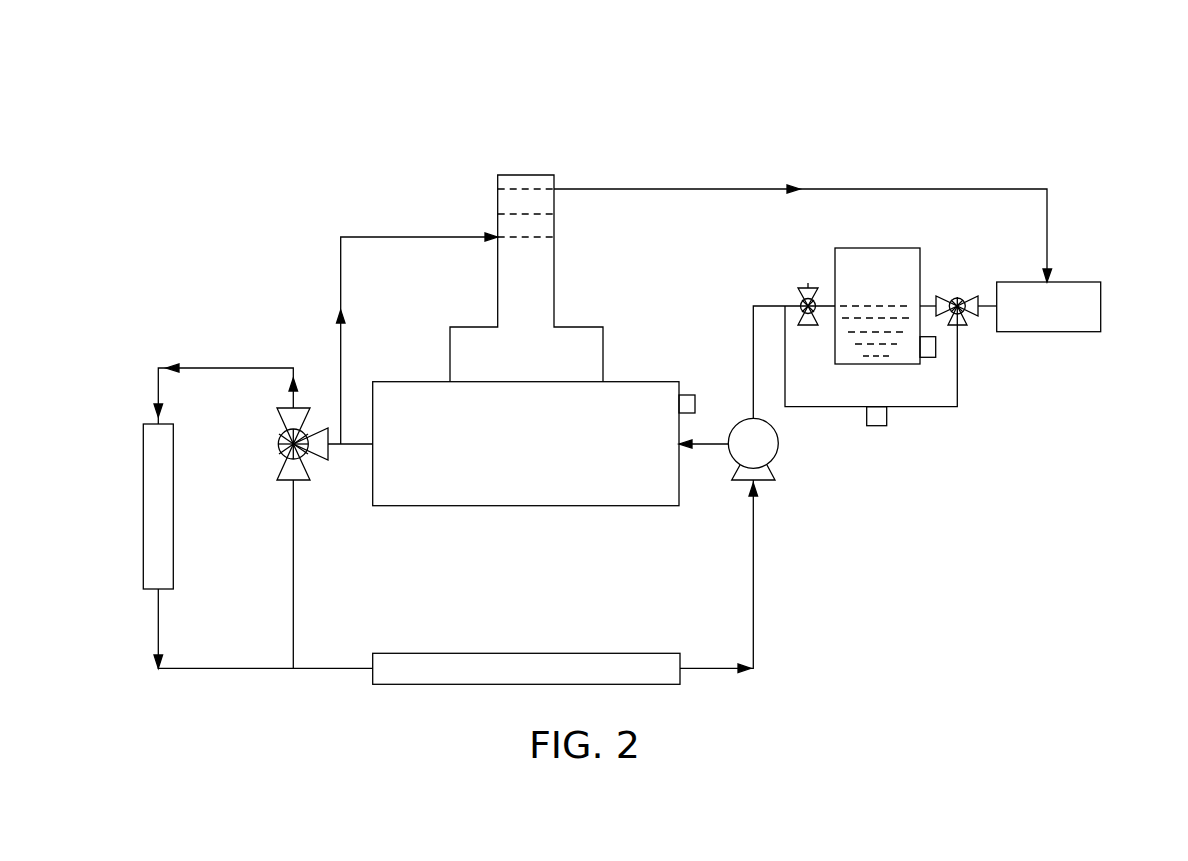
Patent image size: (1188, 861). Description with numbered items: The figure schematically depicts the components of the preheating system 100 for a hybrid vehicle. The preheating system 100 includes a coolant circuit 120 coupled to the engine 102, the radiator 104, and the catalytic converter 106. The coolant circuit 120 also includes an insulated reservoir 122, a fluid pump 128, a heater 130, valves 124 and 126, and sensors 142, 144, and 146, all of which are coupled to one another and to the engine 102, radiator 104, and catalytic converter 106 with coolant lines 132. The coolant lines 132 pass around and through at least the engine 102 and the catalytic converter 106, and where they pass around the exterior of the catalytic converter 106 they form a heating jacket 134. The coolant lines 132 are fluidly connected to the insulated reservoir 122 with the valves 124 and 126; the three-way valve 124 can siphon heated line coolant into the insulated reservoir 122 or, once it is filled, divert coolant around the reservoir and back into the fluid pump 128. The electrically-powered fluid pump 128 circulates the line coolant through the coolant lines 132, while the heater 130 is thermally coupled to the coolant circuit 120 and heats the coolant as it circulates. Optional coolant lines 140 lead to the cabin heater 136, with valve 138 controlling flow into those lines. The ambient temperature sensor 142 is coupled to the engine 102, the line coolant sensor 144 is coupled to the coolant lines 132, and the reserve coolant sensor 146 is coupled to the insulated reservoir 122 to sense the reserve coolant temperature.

The preheating system 100 is at (1014, 58).
The engine 102 is at (547, 459).
The radiator 104 is at (520, 653).
The catalytic converter 106 is at (532, 286).
The coolant circuit 120 is at (1135, 451).
The insulated reservoir 122 is at (872, 248).
The three-way valve 124 is at (957, 297).
The valve 126 is at (807, 283).
The fluid pump 128 is at (775, 457).
The heater 130 is at (1080, 332).
The coolant lines 132 is at (408, 237).
The heating jacket 134 is at (532, 213).
The cabin heater 136 is at (143, 510).
The valve 138 is at (277, 444).
The coolant lines 140 is at (227, 367).
The ambient temperature sensor 142 is at (690, 395).
The line coolant sensor 144 is at (880, 427).
The reserve coolant sensor 146 is at (937, 345).